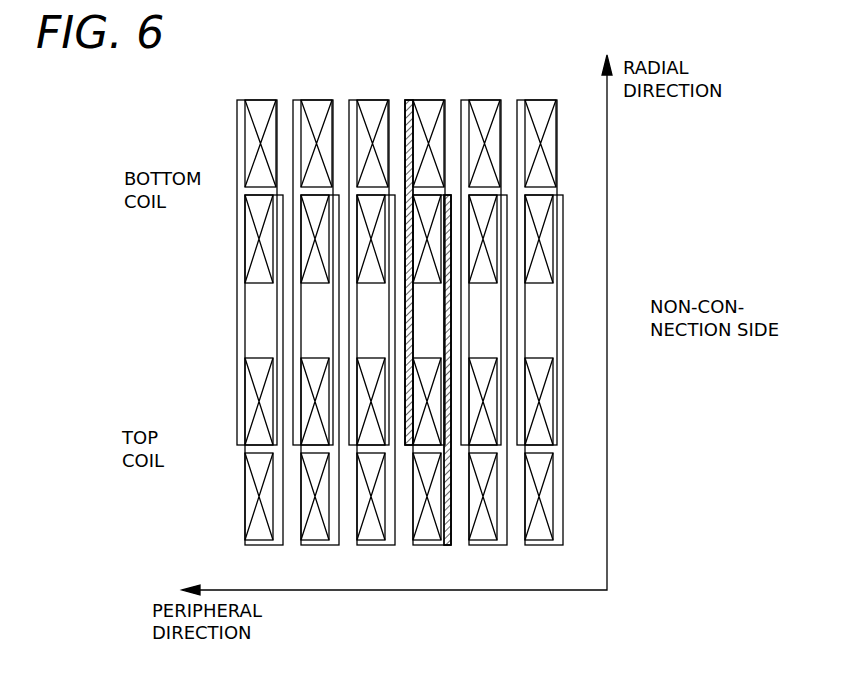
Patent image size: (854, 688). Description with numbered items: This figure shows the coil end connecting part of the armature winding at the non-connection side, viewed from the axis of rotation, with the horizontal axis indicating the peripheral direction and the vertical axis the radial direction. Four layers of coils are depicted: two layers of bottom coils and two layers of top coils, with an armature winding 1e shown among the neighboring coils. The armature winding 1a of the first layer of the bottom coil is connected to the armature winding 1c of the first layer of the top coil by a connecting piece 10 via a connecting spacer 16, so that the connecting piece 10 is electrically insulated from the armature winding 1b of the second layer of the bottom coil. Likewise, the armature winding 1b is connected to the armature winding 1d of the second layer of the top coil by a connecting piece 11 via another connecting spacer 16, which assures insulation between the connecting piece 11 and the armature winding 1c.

The armature winding of the first layer of the bottom coil 1a is at (435, 106).
The armature winding of the second layer of the bottom coil 1b is at (423, 203).
The armature winding of the first layer of the top coil 1c is at (425, 440).
The armature winding of the second layer of the top coil 1d is at (425, 538).
The coil 1e is at (268, 104).
The connecting piece 10 is at (406, 125).
The connecting piece 11 is at (448, 536).
The connecting spacer 16 is at (408, 100).